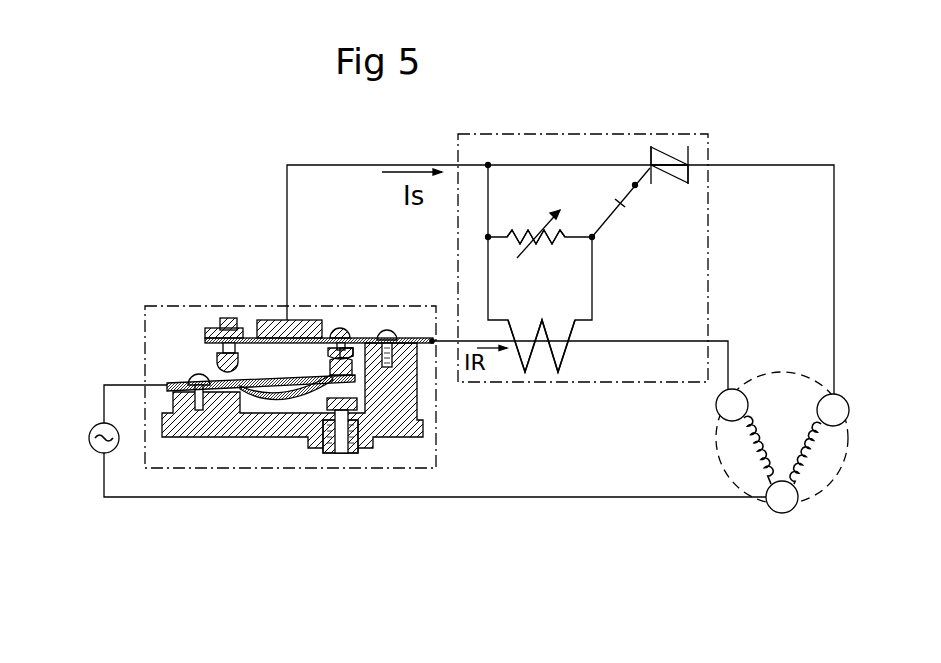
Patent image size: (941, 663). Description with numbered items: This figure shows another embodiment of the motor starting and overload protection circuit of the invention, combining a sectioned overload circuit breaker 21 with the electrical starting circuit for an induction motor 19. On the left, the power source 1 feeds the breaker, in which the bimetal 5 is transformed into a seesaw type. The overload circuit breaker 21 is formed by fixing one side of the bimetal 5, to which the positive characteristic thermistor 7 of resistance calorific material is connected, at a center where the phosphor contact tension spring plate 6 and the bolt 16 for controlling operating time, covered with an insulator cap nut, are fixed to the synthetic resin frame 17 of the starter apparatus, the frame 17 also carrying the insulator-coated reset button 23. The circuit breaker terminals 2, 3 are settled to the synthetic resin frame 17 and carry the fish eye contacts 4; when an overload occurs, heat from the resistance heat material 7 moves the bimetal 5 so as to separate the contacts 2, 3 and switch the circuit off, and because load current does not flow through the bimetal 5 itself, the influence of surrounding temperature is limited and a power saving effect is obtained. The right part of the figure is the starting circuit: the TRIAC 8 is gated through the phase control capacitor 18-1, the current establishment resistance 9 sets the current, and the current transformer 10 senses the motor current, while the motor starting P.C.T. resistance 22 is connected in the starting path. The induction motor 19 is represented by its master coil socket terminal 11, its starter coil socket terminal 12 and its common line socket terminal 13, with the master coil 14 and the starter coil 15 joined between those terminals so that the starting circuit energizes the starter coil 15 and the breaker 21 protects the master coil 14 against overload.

The AC power source 1 is at (90, 432).
The circuit breaker terminal 2 is at (328, 370).
The circuit breaker terminal 3 is at (307, 361).
The fish eye contact 4 is at (350, 355).
The bimetal 5 is at (340, 328).
The contact tension spring plate 6 is at (272, 395).
The positive characteristic thermistor 7 is at (275, 320).
The TRIAC 8 is at (690, 158).
The current establishment resistance 9 is at (540, 243).
The current transformer 10 is at (563, 360).
The master coil socket terminal 11 is at (742, 390).
The starter coil socket terminal 12 is at (845, 398).
The common line socket terminal 13 is at (792, 508).
The master coil 14 is at (753, 453).
The starter coil 15 is at (818, 450).
The bolt for controlling operating time 16 is at (207, 340).
The synthetic resin frame 17 is at (220, 437).
The phase control capacitor 18-1 is at (624, 205).
The induction motor 19 is at (787, 440).
The overload circuit breaker 21 is at (393, 468).
The motor starting P.C.T. resistance 22 is at (708, 222).
The reset button 23 is at (337, 455).